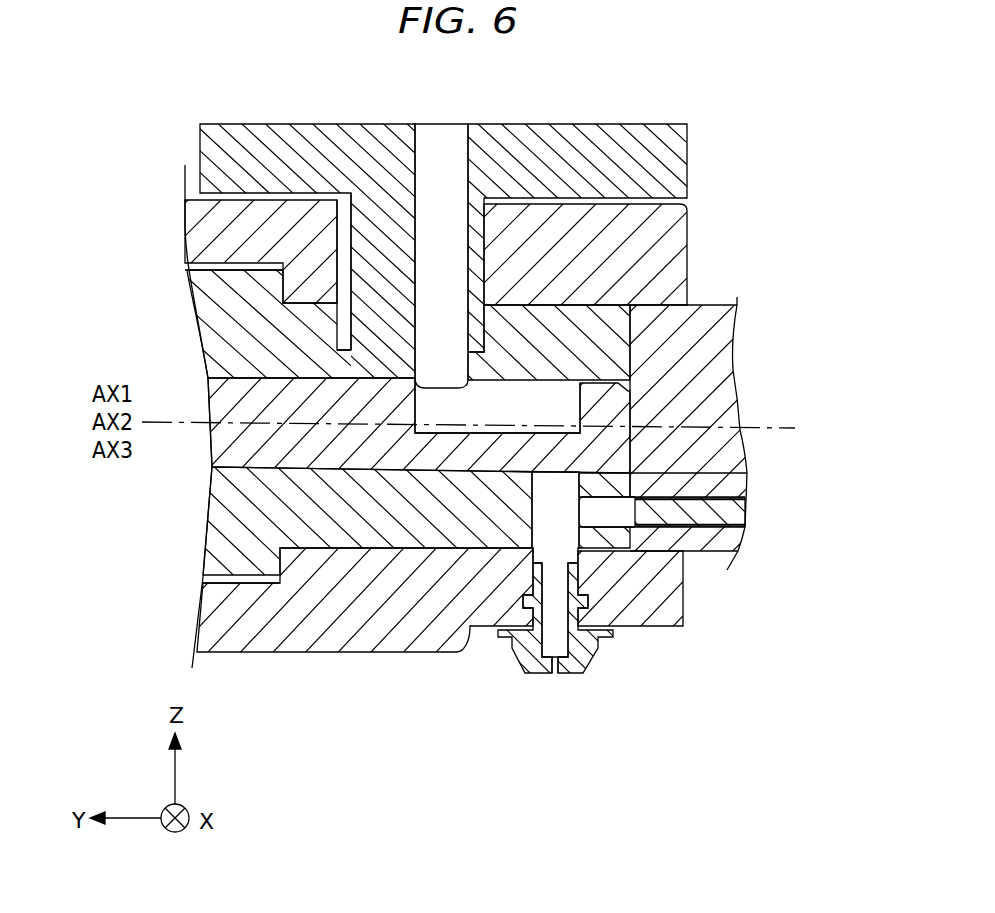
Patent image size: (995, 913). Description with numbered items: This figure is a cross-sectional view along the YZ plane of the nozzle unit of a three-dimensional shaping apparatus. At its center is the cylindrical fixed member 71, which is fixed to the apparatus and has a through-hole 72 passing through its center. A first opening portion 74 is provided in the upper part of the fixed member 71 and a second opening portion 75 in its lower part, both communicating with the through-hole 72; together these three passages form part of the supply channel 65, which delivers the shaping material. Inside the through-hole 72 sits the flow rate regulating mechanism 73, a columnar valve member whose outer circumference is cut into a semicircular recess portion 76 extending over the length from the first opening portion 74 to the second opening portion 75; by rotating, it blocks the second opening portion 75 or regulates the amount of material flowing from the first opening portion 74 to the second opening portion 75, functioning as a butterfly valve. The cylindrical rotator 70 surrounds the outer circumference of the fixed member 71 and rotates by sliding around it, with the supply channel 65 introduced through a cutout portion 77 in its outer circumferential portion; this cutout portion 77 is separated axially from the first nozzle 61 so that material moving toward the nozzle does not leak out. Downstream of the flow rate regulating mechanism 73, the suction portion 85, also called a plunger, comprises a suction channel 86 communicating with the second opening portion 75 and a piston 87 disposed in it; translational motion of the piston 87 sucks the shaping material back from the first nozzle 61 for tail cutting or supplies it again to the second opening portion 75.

The first nozzle 61 is at (573, 673).
The supply channel 65 is at (415, 148).
The rotator 70 is at (685, 238).
The fixed member 71 is at (641, 282).
The through-hole 72 is at (543, 381).
The flow rate regulating mechanism 73 is at (634, 446).
The first opening portion 74 is at (467, 368).
The second opening portion 75 is at (533, 512).
The recess portion 76 is at (527, 432).
The cutout portion 77 is at (337, 252).
The suction portion 85 is at (701, 549).
The suction channel 86 is at (608, 513).
The piston 87 is at (737, 515).